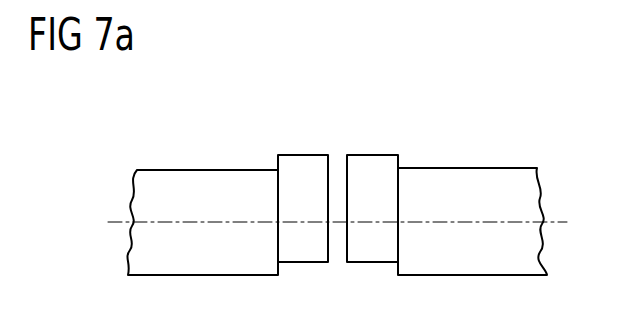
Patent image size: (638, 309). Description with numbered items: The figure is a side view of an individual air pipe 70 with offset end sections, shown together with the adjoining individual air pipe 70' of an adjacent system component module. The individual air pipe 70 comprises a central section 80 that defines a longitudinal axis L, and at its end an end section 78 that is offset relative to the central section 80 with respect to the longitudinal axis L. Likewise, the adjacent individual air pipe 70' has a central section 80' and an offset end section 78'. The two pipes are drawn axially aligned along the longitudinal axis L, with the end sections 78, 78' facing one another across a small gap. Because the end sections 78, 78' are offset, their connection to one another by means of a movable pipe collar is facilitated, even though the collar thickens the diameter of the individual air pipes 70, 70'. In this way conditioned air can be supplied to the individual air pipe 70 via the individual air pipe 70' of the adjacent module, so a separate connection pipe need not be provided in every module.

The individual air pipe of an adjacent system component module 70' is at (214, 173).
The individual air pipe 70 is at (458, 174).
The central section of the adjacent individual air pipe 80' is at (202, 193).
The central section of the individual air pipe 80 is at (472, 195).
The end section of the adjacent individual air pipe 78' is at (303, 180).
The end section of the individual air pipe 78 is at (374, 181).
The longitudinal axis of the central section L is at (555, 224).